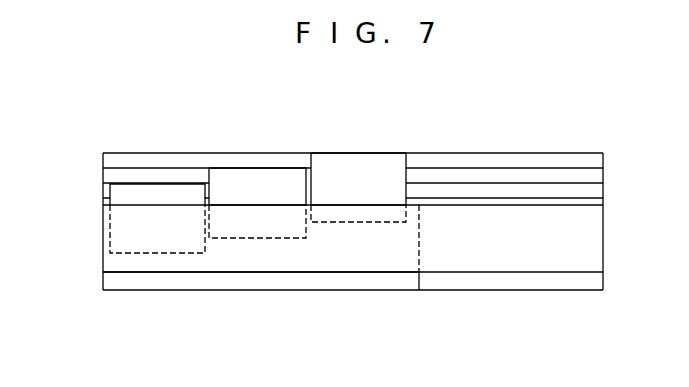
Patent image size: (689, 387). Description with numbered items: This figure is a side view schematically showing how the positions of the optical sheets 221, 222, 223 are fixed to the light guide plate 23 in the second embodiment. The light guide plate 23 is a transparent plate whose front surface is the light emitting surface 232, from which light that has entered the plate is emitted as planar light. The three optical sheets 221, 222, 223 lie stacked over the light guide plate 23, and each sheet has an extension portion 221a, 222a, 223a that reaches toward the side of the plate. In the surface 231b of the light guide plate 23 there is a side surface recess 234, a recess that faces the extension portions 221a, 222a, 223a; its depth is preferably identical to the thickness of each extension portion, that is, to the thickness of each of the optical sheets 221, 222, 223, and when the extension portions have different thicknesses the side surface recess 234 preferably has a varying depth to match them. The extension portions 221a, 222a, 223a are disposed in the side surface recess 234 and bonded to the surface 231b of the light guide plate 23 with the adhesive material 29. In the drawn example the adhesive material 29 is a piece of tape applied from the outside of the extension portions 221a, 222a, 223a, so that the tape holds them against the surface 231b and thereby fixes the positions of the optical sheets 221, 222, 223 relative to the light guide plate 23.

The optical sheet 223 is at (590, 162).
The optical sheet 222 is at (590, 175).
The optical sheet 221 is at (590, 189).
The light emitting surface 232 is at (473, 195).
The adhesive material 29 is at (590, 245).
The light guide plate 23 is at (590, 283).
The surface 231b is at (500, 281).
The side surface recess 234 is at (307, 283).
The extension portion 221a is at (156, 192).
The extension portion 222a is at (253, 179).
The extension portion 223a is at (357, 165).